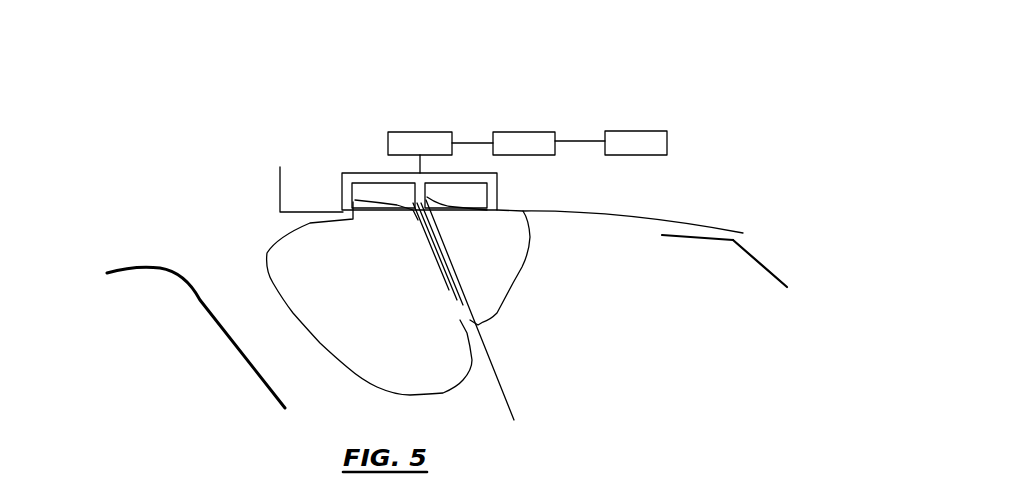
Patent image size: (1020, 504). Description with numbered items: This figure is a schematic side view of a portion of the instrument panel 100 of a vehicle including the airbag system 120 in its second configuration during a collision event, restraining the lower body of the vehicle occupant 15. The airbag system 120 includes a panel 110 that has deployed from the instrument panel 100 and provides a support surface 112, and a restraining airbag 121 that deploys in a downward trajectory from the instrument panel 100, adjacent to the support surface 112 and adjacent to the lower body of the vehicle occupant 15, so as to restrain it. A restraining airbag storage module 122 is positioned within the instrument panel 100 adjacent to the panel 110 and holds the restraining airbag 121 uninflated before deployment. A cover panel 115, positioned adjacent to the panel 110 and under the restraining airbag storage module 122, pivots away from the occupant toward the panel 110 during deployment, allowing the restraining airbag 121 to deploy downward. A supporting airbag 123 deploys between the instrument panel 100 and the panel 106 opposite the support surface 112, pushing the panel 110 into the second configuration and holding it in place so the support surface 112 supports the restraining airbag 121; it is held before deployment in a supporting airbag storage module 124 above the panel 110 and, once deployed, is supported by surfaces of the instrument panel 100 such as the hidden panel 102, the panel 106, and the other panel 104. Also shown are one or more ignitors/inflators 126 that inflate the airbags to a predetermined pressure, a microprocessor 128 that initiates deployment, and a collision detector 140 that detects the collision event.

The lower body of the vehicle occupant 15 is at (158, 288).
The instrument panel 100 is at (290, 202).
The hidden panel 102 is at (680, 225).
The other panel 104 is at (713, 242).
The panel opposite the support surface 106 is at (772, 277).
The panel 110 is at (505, 390).
The support surface 112 is at (463, 302).
The cover panel 115 is at (427, 248).
The airbag system 120 is at (356, 98).
The restraining airbag 121 is at (290, 245).
The restraining airbag storage module 122 is at (358, 172).
The supporting airbag 123 is at (507, 278).
The supporting airbag storage module 124 is at (493, 193).
The ignitors/inflators 126 is at (423, 138).
The microprocessor 128 is at (515, 138).
The collision detector 140 is at (635, 138).